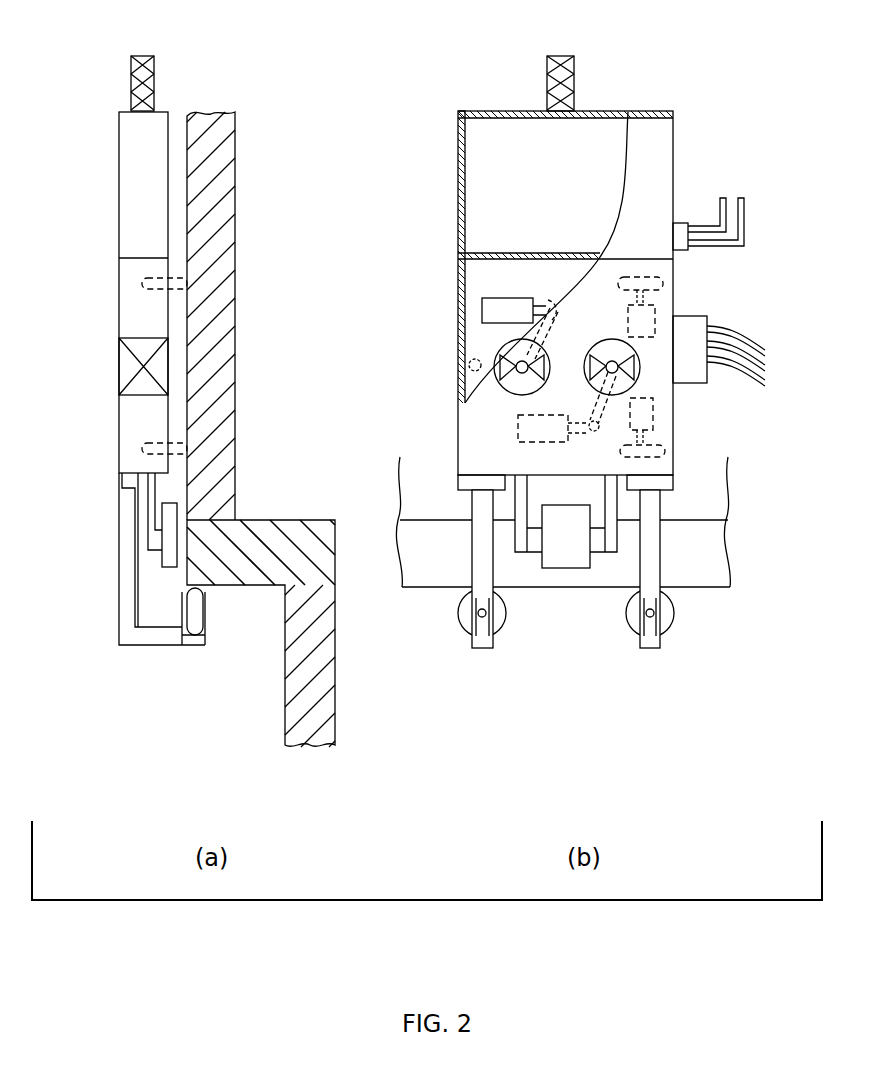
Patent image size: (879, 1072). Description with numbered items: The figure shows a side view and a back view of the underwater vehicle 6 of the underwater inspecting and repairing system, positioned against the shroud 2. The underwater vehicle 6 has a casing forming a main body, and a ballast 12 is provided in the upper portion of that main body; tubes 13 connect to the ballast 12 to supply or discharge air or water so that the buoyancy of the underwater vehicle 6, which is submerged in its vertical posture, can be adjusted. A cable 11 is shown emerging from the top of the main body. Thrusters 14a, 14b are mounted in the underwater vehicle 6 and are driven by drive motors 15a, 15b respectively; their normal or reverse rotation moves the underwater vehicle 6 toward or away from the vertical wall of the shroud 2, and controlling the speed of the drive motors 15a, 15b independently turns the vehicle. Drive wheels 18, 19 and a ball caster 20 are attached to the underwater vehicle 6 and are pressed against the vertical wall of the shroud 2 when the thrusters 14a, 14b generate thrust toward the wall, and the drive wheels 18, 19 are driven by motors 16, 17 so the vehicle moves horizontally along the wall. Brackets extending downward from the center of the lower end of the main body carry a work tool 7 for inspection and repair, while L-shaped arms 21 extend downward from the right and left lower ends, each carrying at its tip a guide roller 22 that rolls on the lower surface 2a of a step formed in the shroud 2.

The shroud 2 is at (222, 197).
The lower surface of a step 2a is at (254, 570).
The underwater vehicle 6 is at (117, 172).
The work tool 7 is at (168, 515).
The cable 11 is at (157, 68).
The ballast 12 is at (154, 143).
The tubes 13 is at (745, 218).
The thruster 14a is at (520, 372).
The thruster 14b is at (160, 363).
The drive motor 15a is at (483, 306).
The drive motor 15b is at (518, 427).
The motor 16 is at (658, 312).
The motor 17 is at (660, 412).
The drive wheel 18 is at (187, 283).
The drive wheel 19 is at (142, 450).
The ball caster 20 is at (468, 352).
The L-shaped arm 21 is at (128, 590).
The guide roller 22 is at (205, 600).